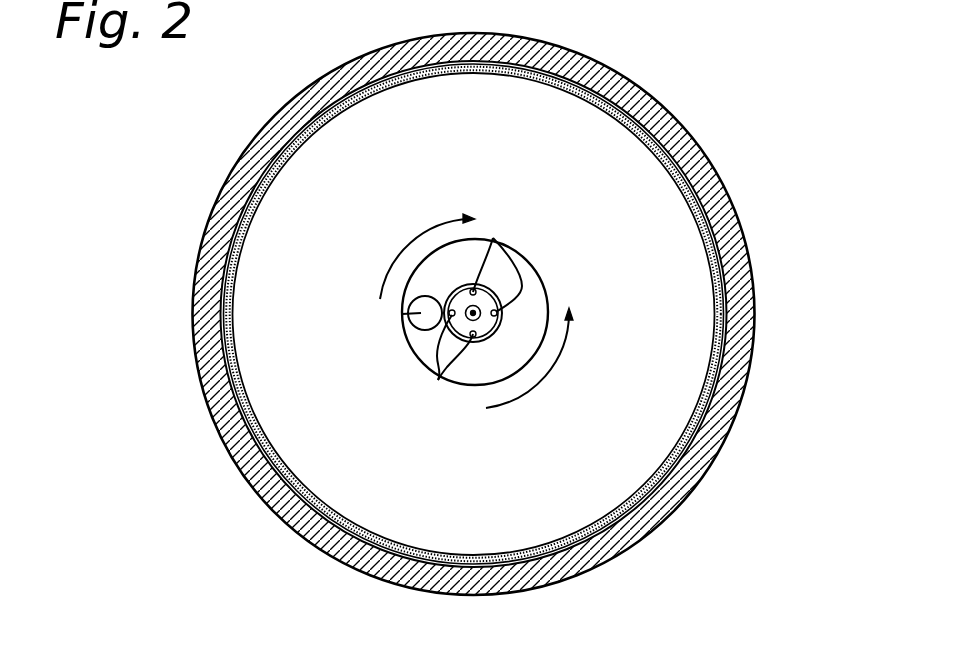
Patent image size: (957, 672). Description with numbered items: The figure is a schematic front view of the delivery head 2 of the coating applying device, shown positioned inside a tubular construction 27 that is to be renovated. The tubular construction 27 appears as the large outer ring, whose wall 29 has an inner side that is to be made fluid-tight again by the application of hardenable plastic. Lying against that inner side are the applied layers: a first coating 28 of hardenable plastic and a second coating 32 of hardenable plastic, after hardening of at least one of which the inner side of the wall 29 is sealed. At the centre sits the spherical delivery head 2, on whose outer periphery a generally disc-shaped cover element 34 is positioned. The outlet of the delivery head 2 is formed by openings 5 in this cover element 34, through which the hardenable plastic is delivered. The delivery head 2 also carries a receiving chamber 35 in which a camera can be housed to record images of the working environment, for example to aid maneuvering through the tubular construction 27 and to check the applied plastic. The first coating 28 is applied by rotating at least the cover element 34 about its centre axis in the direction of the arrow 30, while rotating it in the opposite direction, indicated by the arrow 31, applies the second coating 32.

The delivery head 2 is at (541, 248).
The openings 5 is at (492, 240).
The tubular construction 27 is at (728, 136).
The first coating 28 is at (684, 180).
The wall 29 is at (222, 229).
The arrow 30 is at (416, 238).
The arrow 31 is at (544, 380).
The second coating 32 is at (714, 268).
The cover element 34 is at (478, 319).
The receiving chamber 35 is at (403, 313).